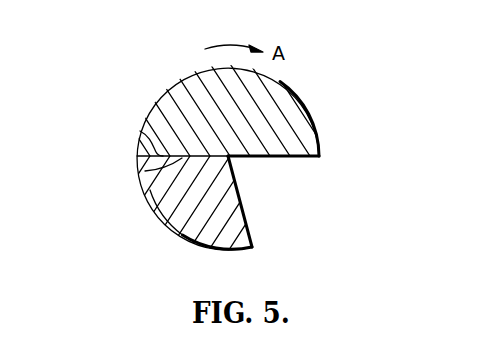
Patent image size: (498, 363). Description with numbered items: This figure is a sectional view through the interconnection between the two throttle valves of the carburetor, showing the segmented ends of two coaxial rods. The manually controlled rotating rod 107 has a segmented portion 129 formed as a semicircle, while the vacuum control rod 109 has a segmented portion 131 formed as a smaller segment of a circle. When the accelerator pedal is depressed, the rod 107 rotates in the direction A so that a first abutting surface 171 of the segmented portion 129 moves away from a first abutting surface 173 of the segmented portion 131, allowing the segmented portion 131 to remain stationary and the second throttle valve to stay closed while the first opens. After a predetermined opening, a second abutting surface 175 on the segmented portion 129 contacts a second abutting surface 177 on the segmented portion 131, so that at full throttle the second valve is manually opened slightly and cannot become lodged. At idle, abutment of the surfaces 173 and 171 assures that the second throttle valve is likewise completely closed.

The manually controlled rotating rod 107 is at (180, 93).
The vacuum control rod 109 is at (178, 238).
The segmented portion of the manually controlled rotating rod 129 is at (292, 98).
The segmented portion of the vacuum control rod 131 is at (160, 215).
The first abutting surface of segmented portion 129 171 is at (145, 171).
The first abutting surface of segmented portion 131 173 is at (140, 133).
The second abutting surface of segmented portion 129 175 is at (292, 160).
The second abutting surface of segmented portion 131 177 is at (248, 228).